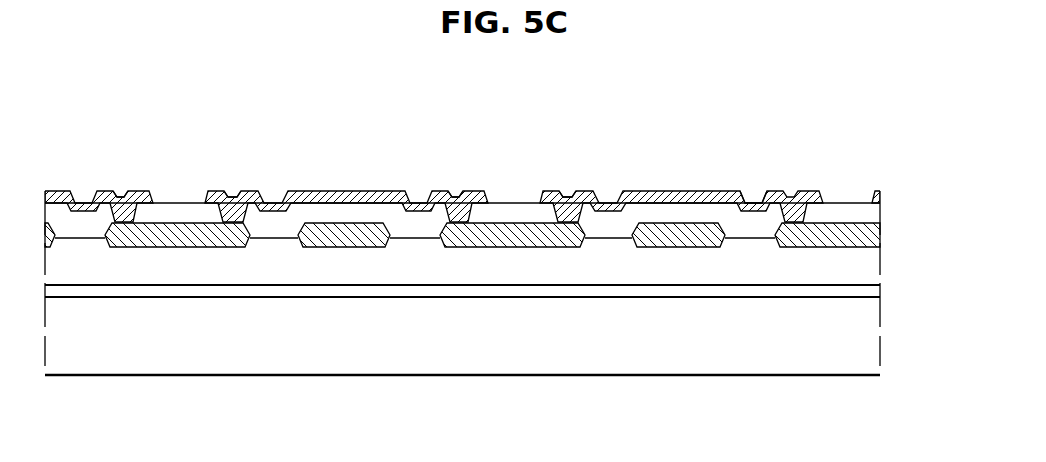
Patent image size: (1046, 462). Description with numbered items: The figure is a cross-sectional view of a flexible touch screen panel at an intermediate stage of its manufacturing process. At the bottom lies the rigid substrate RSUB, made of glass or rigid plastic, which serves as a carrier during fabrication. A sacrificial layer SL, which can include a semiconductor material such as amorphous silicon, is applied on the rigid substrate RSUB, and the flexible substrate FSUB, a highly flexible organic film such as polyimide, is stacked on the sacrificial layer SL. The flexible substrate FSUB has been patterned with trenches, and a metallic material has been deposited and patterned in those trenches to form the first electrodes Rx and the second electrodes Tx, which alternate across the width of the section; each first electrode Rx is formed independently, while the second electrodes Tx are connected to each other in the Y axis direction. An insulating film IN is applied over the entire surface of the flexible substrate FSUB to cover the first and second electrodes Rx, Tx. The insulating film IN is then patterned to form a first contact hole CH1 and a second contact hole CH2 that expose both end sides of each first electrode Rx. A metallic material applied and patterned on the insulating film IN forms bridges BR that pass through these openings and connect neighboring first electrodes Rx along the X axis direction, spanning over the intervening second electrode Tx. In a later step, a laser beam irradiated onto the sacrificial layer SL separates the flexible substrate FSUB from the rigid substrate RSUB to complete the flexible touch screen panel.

The first contact hole CH1 is at (121, 191).
The second contact hole CH2 is at (233, 191).
The insulating film IN is at (176, 203).
The bridge BR is at (348, 198).
The first electrode Rx is at (184, 240).
The second electrode Tx is at (348, 240).
The flexible substrate FSUB is at (876, 264).
The sacrificial layer SL is at (872, 292).
The rigid substrate RSUB is at (876, 334).